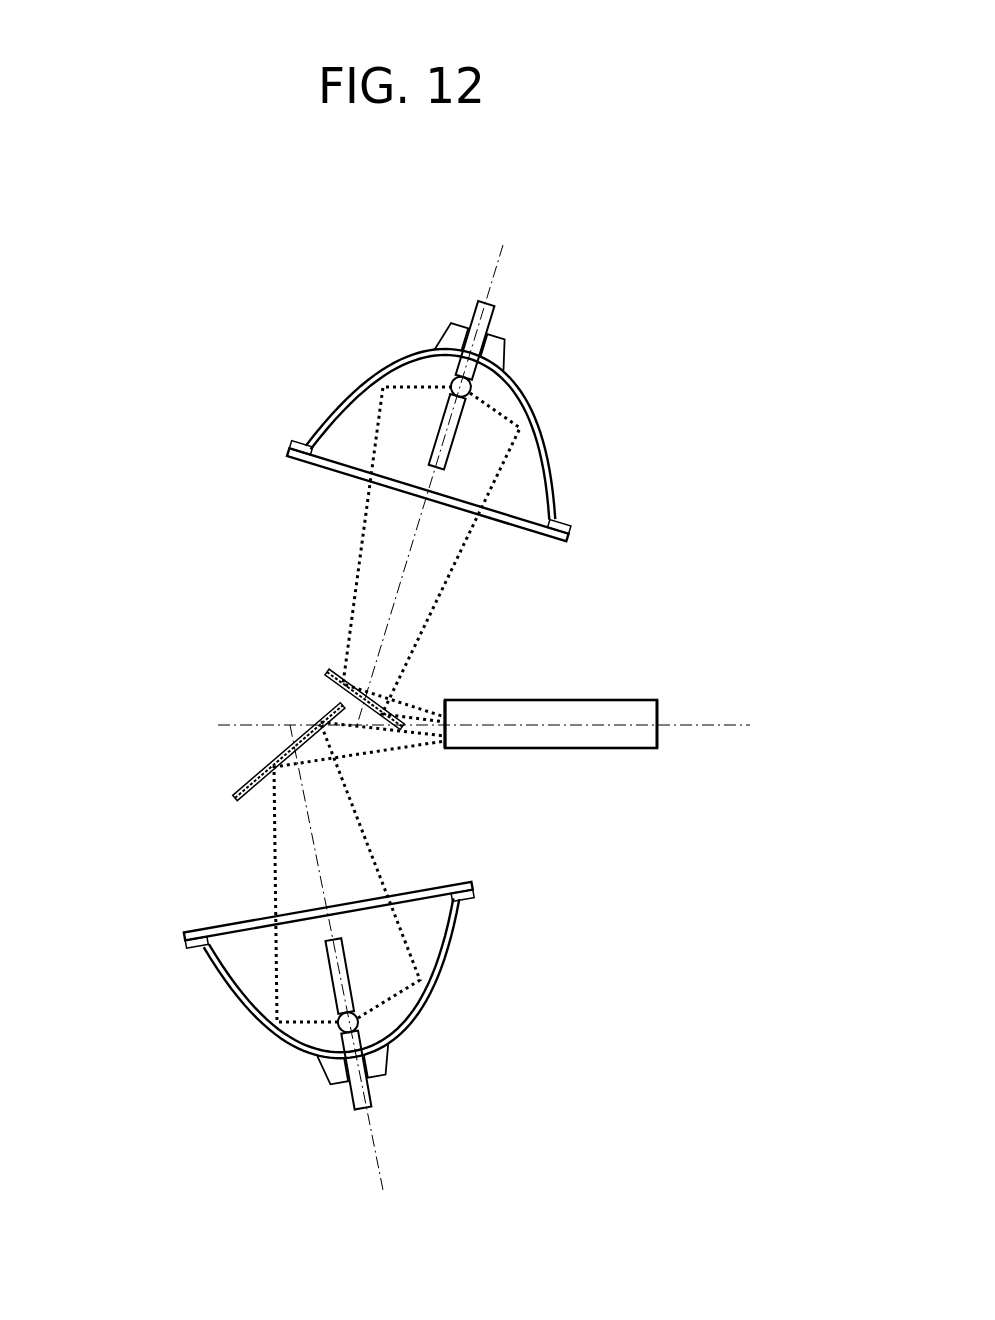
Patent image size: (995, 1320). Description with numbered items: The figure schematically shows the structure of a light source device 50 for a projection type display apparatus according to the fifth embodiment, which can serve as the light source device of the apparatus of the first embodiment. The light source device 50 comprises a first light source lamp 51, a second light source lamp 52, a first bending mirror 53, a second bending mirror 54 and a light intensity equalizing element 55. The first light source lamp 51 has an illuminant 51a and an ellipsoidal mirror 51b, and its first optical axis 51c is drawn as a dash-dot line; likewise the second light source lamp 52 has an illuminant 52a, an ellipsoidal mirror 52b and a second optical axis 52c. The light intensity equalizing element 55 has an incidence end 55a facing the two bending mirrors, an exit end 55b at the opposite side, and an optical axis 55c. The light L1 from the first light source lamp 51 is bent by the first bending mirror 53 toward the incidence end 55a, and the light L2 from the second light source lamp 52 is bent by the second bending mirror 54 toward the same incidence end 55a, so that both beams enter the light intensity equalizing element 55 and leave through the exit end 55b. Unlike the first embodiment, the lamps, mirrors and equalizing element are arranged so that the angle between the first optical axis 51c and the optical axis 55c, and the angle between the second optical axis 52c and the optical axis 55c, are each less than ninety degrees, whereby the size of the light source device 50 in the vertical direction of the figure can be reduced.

The light source device 50 is at (103, 223).
The first light source lamp 51 is at (192, 312).
The illuminant 51a is at (456, 382).
The ellipsoidal mirror 51b is at (452, 415).
The first optical axis 51c is at (410, 552).
The second light source lamp 52 is at (100, 938).
The illuminant 52a is at (347, 1024).
The ellipsoidal mirror 52b is at (343, 993).
The second optical axis 52c is at (308, 832).
The first bending mirror 53 is at (342, 688).
The second bending mirror 54 is at (265, 770).
The light intensity equalizing element 55 is at (573, 700).
The incidence end 55a is at (444, 750).
The exit end 55b is at (662, 745).
The optical axis 55c is at (703, 727).
The first light beam L1 is at (358, 542).
The second light beam L2 is at (272, 908).